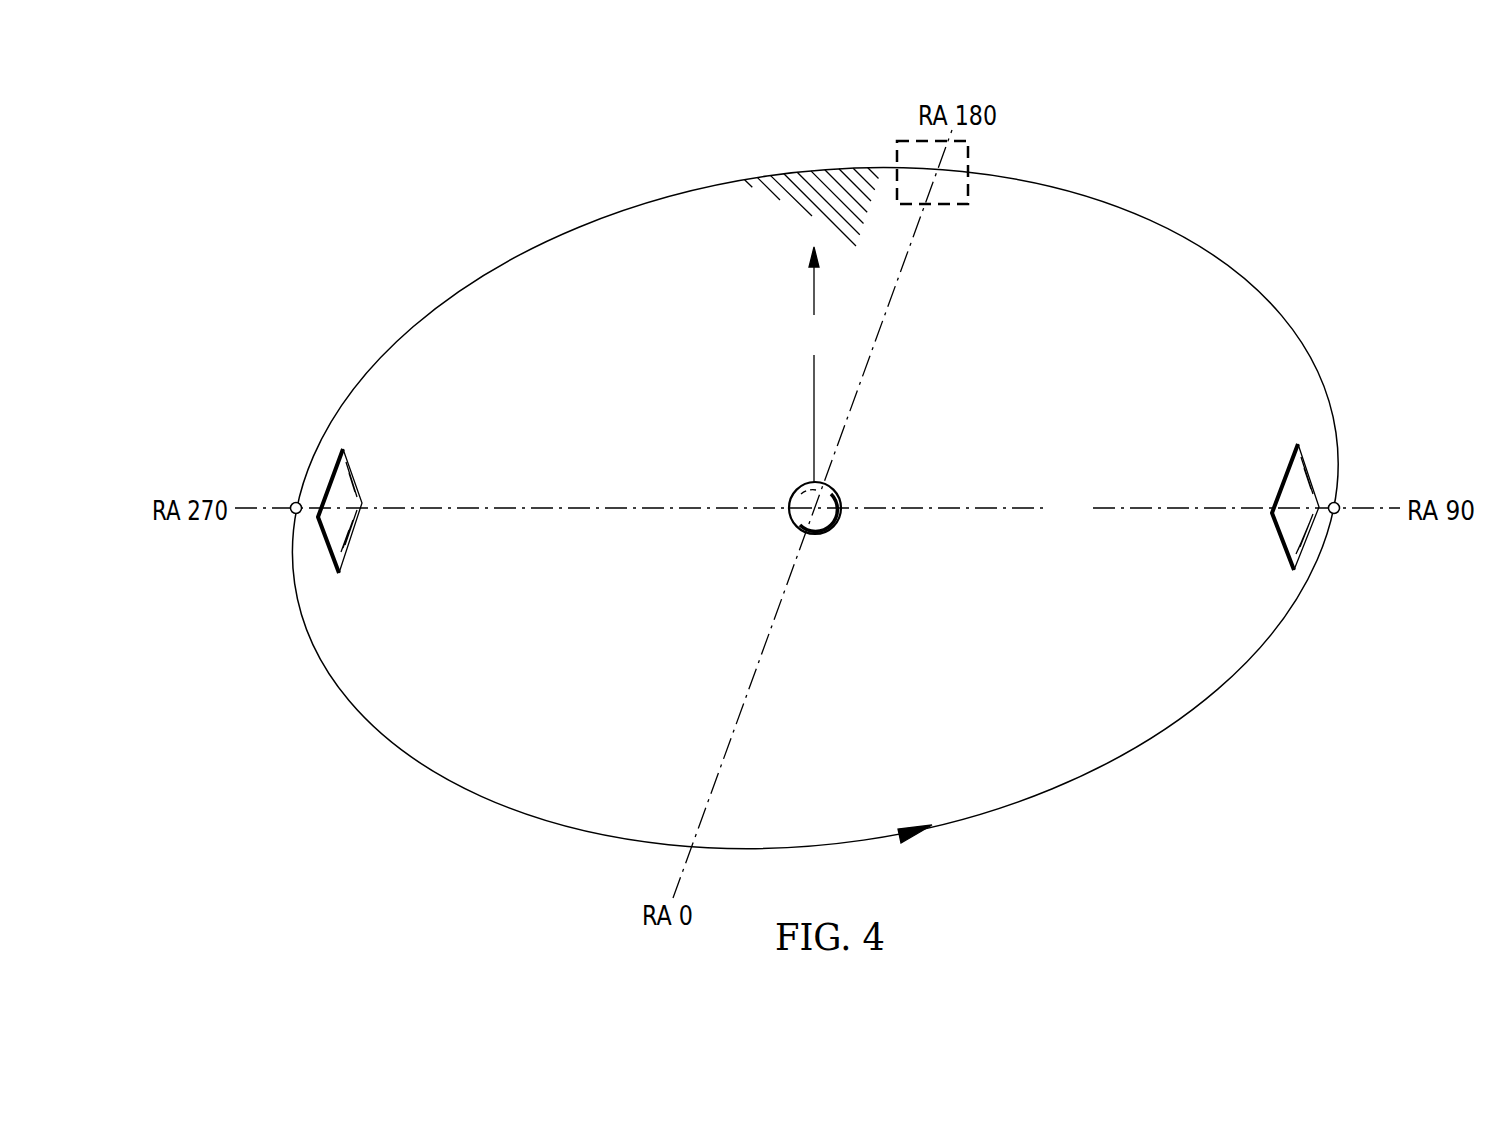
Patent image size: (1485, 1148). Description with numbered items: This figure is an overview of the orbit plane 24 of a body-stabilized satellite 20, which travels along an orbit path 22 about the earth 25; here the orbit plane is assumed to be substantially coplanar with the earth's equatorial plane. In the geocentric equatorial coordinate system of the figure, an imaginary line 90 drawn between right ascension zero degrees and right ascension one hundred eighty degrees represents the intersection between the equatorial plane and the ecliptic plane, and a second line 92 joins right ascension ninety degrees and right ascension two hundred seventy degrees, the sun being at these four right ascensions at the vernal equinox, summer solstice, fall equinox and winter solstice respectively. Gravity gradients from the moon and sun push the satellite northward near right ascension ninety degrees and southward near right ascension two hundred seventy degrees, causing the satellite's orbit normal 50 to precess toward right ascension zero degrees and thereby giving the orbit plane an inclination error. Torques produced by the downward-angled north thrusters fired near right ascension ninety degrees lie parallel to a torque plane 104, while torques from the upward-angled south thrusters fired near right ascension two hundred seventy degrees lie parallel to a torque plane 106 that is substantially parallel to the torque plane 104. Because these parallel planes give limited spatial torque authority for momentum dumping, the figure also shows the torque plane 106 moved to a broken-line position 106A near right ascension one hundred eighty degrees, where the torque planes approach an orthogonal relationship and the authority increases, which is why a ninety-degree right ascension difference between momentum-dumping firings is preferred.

The body-stabilized satellite 20 is at (292, 504).
The orbit path 22 is at (815, 507).
The orbit plane 24 is at (812, 188).
The earth 25 is at (824, 490).
The orbit normal 50 is at (816, 364).
The imaginary line 90 is at (812, 514).
The orbit axis 92 is at (817, 510).
The torque plane 104 is at (1300, 528).
The torque plane 106 is at (357, 527).
The broken-line position 106A is at (969, 160).